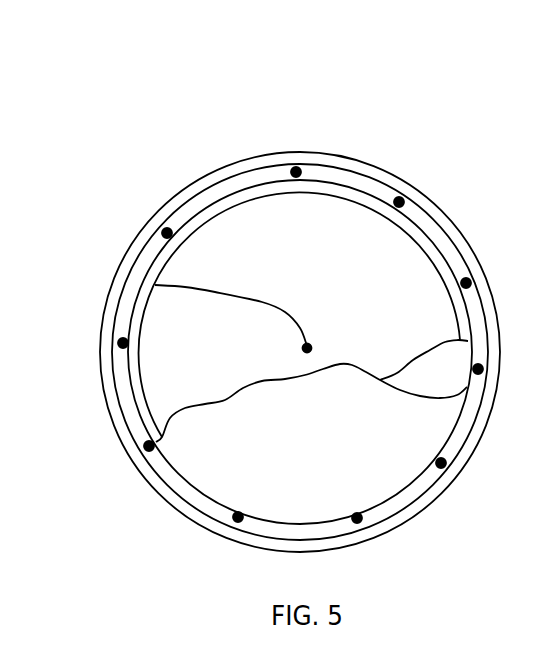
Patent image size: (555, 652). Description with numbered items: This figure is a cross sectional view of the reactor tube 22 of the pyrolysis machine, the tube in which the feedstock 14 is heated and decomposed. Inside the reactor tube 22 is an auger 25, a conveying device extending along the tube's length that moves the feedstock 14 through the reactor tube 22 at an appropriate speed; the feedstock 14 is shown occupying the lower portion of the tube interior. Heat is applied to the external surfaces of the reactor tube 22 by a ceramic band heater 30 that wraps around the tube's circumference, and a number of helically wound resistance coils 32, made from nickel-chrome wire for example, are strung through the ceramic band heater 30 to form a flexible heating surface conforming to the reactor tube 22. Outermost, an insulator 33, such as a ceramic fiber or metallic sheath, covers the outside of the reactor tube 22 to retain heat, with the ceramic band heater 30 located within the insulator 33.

The feedstock 14 is at (233, 466).
The reactor tube 22 is at (439, 250).
The auger 25 is at (263, 301).
The ceramic band heater 30 is at (207, 198).
The helically wound resistance coil 32 is at (167, 233).
The insulator 33 is at (265, 163).